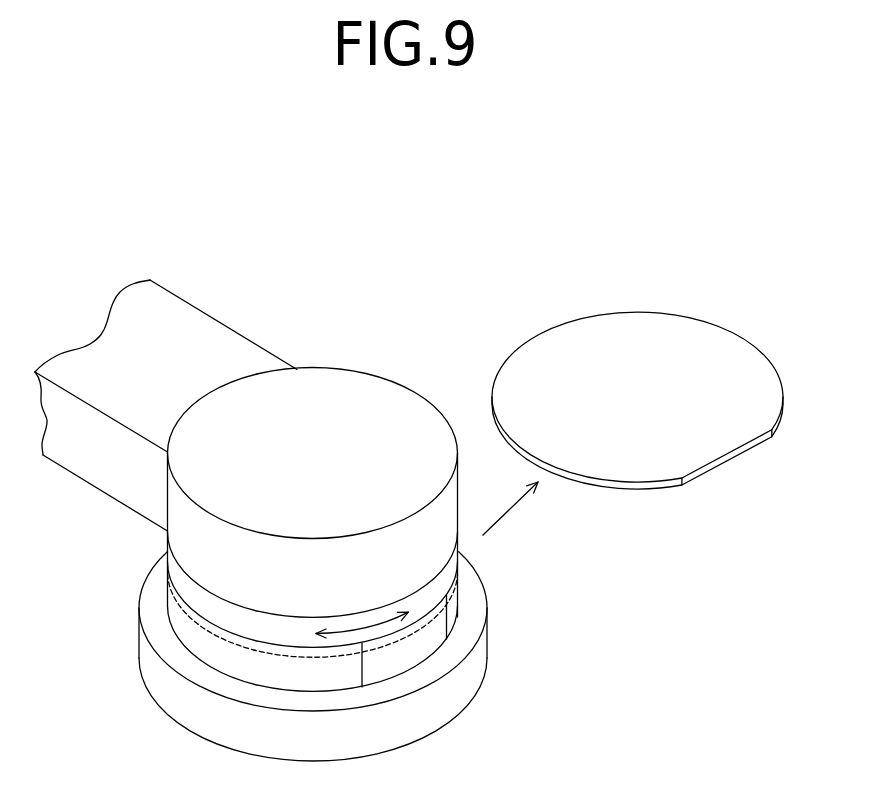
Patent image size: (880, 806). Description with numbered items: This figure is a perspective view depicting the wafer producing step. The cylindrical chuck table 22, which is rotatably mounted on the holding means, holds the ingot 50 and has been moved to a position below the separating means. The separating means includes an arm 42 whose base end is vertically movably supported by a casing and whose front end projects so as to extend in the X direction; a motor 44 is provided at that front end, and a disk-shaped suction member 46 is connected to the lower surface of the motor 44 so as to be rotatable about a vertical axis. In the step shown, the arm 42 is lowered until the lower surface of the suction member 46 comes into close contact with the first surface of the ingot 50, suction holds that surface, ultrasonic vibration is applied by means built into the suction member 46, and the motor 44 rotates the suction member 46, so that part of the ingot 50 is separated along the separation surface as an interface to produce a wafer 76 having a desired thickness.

The chuck table 22 is at (197, 715).
The arm 42 is at (193, 318).
The motor 44 is at (370, 393).
The suction member 46 is at (457, 573).
The ingot 50 is at (452, 617).
The wafer 76 is at (557, 337).